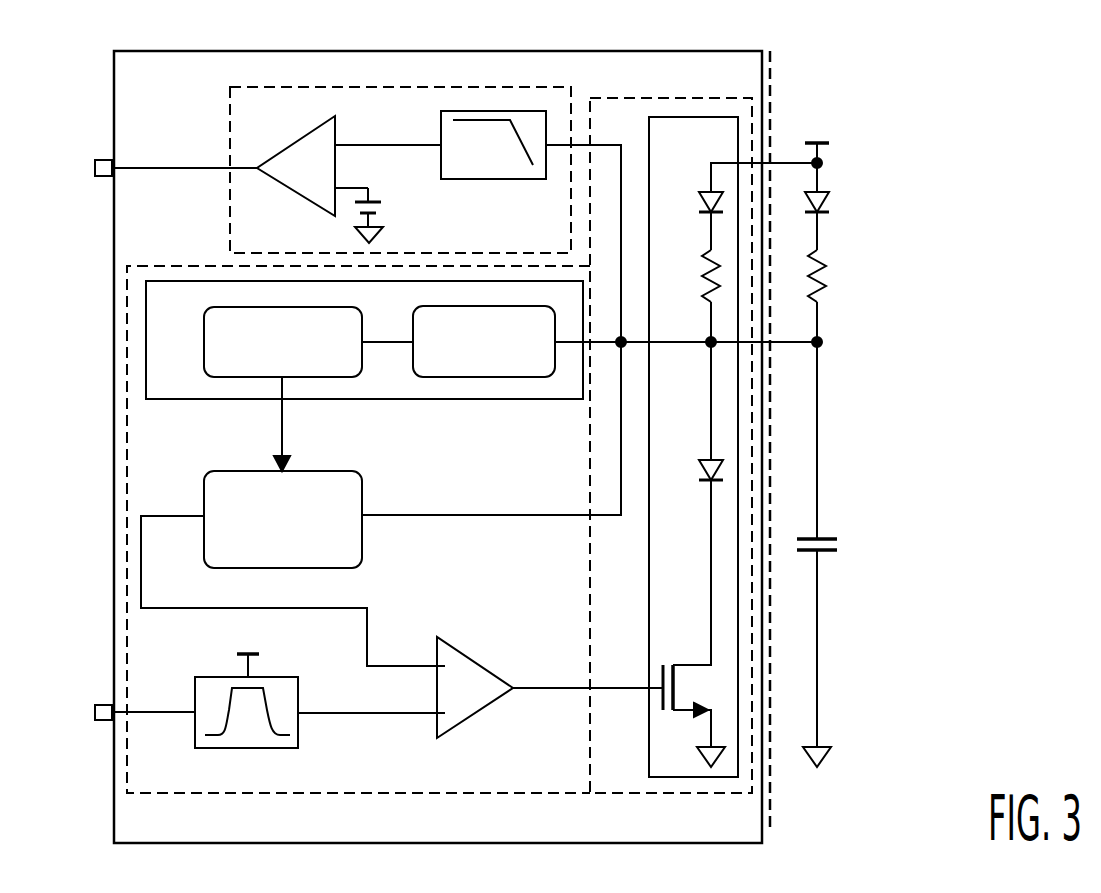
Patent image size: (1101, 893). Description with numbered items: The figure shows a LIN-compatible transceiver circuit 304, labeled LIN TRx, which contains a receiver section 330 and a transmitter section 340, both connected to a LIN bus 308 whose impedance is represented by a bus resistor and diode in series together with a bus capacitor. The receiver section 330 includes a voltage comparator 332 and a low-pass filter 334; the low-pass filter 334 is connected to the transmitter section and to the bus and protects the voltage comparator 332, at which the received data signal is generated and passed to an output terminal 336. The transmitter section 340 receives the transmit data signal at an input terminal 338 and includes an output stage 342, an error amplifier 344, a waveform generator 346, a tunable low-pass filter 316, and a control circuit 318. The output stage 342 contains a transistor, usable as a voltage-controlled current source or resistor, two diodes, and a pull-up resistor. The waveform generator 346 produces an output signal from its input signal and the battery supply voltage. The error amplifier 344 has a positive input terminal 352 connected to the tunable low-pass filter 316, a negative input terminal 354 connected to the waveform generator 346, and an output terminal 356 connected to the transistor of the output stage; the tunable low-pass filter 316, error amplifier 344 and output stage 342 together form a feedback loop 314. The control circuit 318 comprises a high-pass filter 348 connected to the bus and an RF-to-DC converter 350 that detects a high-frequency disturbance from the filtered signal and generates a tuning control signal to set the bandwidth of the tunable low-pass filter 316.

The transceiver circuit 304 is at (766, 55).
The LIN bus 308 is at (818, 705).
The feedback loop 314 is at (545, 517).
The tunable low-pass filter 316 is at (204, 540).
The control circuit 318 is at (176, 400).
The receiver section 330 is at (230, 97).
The voltage comparator 332 is at (320, 208).
The low-pass filter 334 is at (441, 133).
The output terminal 336 is at (97, 160).
The input terminal 338 is at (96, 705).
The transmitter section 340 is at (668, 98).
The output stage 342 is at (649, 742).
The error amplifier 344 is at (466, 655).
The waveform generator 346 is at (299, 691).
The high-pass filter 348 is at (204, 348).
The RF-to-DC converter 350 is at (413, 330).
The positive input terminal 352 is at (437, 659).
The negative input terminal 354 is at (437, 713).
The output terminal 356 is at (514, 690).